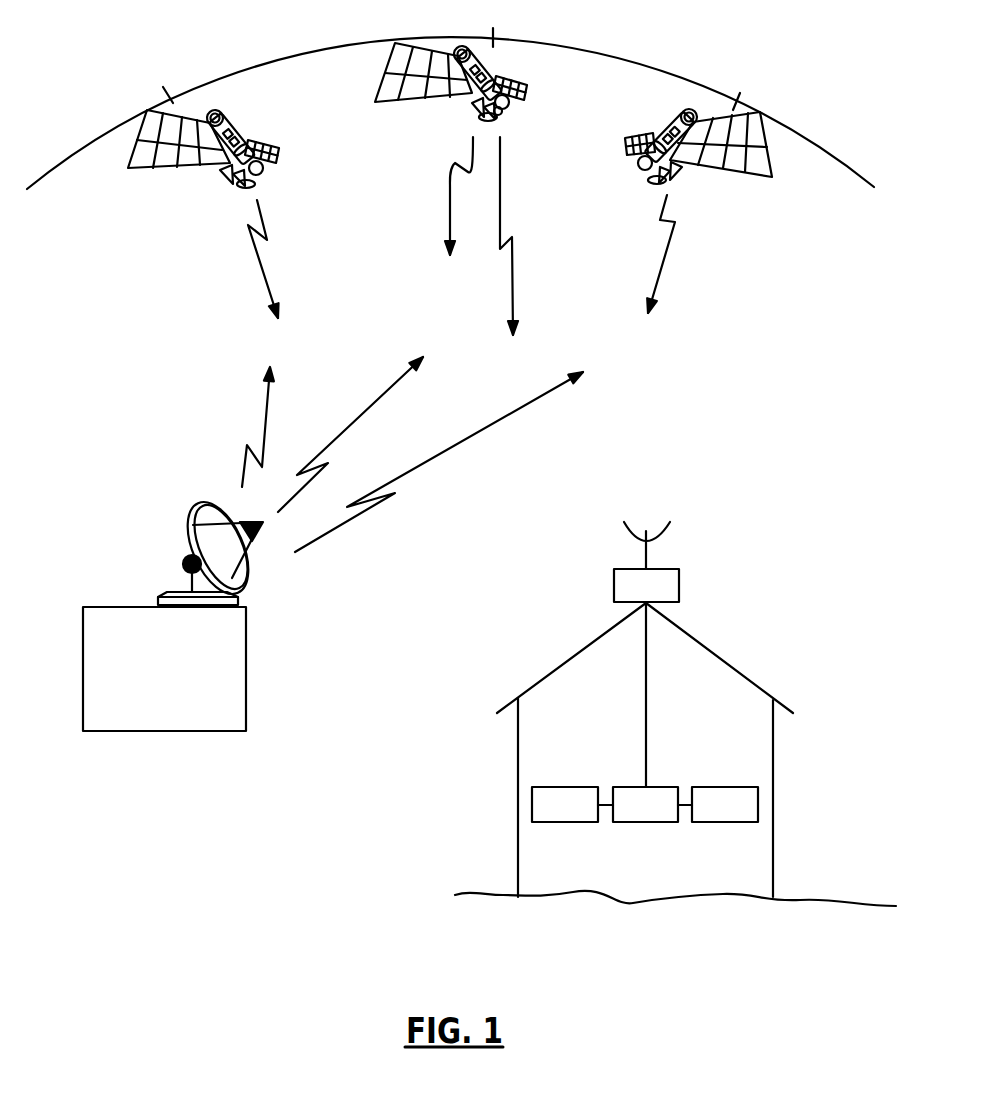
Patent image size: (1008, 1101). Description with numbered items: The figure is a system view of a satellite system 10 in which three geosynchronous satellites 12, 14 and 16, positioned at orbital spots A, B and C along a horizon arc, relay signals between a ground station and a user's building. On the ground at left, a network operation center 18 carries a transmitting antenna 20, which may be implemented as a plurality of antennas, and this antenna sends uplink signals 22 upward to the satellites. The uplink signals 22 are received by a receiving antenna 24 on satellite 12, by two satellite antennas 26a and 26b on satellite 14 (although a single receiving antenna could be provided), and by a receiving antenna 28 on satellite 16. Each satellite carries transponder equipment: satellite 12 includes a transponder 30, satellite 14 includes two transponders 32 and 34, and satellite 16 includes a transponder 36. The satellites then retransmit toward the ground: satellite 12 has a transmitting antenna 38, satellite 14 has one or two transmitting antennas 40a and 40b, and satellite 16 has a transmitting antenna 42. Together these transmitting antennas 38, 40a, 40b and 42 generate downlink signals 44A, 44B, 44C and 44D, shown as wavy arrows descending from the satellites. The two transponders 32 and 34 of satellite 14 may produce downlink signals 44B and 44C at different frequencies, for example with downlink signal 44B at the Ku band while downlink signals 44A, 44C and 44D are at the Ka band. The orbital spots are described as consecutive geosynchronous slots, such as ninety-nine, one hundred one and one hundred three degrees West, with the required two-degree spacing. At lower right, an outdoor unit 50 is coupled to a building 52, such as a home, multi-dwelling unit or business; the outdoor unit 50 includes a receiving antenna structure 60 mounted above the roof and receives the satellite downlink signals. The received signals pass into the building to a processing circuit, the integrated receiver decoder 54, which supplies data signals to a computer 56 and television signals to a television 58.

The satellite system 10 is at (198, 395).
The satellite 12 is at (228, 134).
The satellite 14 is at (484, 89).
The satellite 16 is at (699, 127).
The network operation center 18 is at (247, 695).
The transmitting antenna 20 is at (187, 520).
The uplink signals 22 is at (265, 412).
The receiving antenna 24 is at (220, 170).
The satellite antenna 26a is at (471, 106).
The satellite antenna 26b is at (487, 118).
The receiving antenna 28 is at (652, 183).
The transponder 30 is at (233, 133).
The transponder 32 is at (468, 52).
The transponder 34 is at (487, 72).
The transponder 36 is at (675, 118).
The transmitting antenna 38 is at (258, 181).
The transmitting antenna 40a is at (504, 115).
The transmitting antenna 40b is at (515, 102).
The transmitting antenna 42 is at (676, 174).
The downlink signal 44A is at (252, 247).
The downlink signal 44B is at (450, 207).
The downlink signal 44C is at (520, 283).
The downlink signal 44D is at (672, 253).
The outdoor unit 50 is at (675, 688).
The building 52 is at (748, 677).
The integrated receiver decoder 54 is at (657, 787).
The computer 56 is at (563, 787).
The television 58 is at (725, 787).
The receiving antenna structure 60 is at (625, 533).